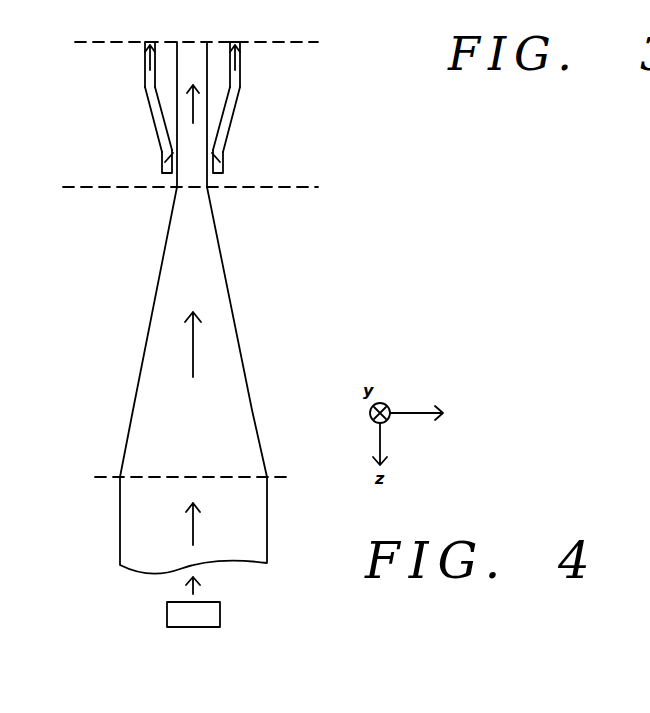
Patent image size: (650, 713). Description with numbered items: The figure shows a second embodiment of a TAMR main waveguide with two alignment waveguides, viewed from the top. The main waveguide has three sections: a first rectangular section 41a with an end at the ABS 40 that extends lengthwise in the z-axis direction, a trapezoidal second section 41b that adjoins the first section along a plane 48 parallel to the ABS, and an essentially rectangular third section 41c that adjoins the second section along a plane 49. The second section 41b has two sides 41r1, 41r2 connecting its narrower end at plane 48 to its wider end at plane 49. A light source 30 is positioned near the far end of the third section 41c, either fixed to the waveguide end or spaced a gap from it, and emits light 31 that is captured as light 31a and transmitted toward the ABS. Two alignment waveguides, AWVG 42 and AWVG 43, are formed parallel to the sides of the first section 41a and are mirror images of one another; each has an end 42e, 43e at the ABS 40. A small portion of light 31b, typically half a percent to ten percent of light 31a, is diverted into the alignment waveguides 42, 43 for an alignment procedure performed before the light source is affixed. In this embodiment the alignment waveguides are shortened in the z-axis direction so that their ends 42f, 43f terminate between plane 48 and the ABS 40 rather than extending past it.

The light source 30 is at (176, 610).
The light 31 is at (196, 590).
The light captured by main waveguide 31a is at (195, 110).
The diverted light portion 31b is at (148, 62).
The ABS plane 40 is at (190, 41).
The first rectangular section 41a is at (193, 58).
The second section 41b is at (191, 332).
The third section 41c is at (128, 524).
The side of second section 41r1 is at (147, 335).
The side of second section 41r2 is at (246, 366).
The alignment waveguide 42 is at (106, 87).
The end of alignment waveguide section 42e is at (151, 42).
The end of alignment waveguide 42f is at (162, 173).
The alignment waveguide 43 is at (280, 87).
The end of alignment waveguide section 43e is at (237, 42).
The end of alignment waveguide 43f is at (223, 173).
The plane 48 is at (190, 187).
The plane 49 is at (190, 476).